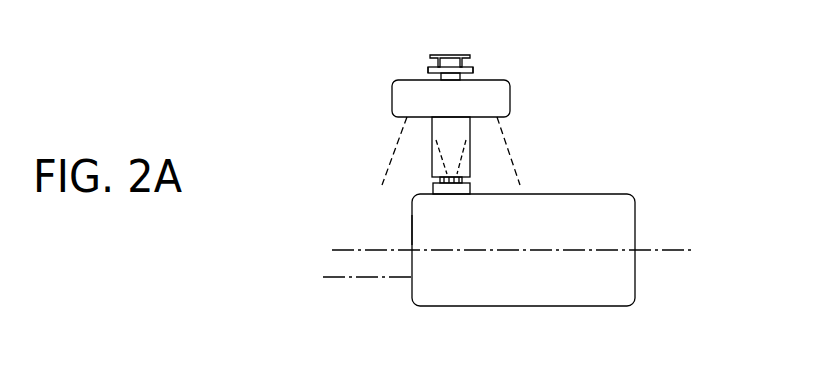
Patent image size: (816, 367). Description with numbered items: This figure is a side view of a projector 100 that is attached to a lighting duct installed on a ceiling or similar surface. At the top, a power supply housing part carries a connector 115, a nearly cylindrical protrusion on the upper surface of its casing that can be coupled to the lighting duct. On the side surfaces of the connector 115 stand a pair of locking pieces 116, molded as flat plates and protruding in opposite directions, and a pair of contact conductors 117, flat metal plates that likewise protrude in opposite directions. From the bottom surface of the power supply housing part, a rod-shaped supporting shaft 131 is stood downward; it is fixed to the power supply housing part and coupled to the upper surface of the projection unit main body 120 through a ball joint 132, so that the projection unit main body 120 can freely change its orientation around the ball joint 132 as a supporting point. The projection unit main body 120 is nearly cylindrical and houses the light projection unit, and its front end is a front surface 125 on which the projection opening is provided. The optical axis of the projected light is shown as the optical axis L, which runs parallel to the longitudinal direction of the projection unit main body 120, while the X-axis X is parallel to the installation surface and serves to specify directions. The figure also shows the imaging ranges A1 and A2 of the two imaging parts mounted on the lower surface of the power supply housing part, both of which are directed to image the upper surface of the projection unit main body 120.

The projector 100 is at (322, 69).
The connector 115 is at (474, 67).
The locking pieces 116 is at (428, 70).
The contact conductors 117 is at (430, 56).
The projection unit main body 120 is at (635, 223).
The front surface 125 is at (412, 228).
The supporting shaft 131 is at (471, 164).
The ball joint 132 is at (421, 175).
The imaging range A1 is at (432, 136).
The imaging range A2 is at (471, 136).
The X-axis X is at (522, 252).
The optical axis L is at (343, 279).